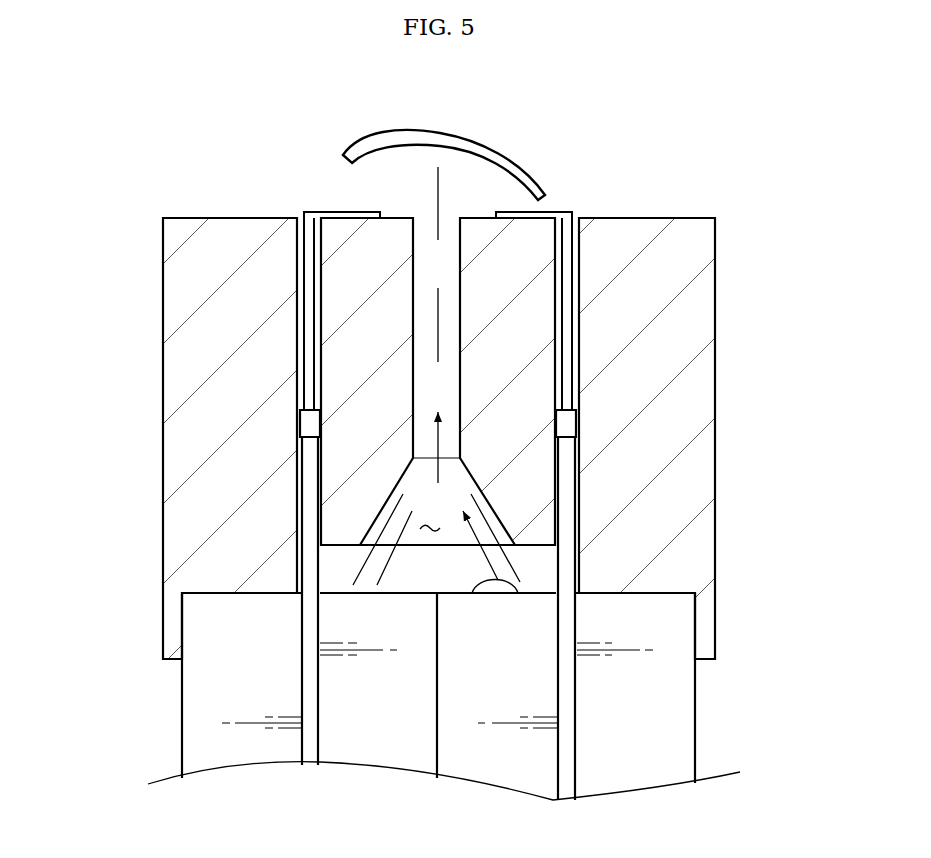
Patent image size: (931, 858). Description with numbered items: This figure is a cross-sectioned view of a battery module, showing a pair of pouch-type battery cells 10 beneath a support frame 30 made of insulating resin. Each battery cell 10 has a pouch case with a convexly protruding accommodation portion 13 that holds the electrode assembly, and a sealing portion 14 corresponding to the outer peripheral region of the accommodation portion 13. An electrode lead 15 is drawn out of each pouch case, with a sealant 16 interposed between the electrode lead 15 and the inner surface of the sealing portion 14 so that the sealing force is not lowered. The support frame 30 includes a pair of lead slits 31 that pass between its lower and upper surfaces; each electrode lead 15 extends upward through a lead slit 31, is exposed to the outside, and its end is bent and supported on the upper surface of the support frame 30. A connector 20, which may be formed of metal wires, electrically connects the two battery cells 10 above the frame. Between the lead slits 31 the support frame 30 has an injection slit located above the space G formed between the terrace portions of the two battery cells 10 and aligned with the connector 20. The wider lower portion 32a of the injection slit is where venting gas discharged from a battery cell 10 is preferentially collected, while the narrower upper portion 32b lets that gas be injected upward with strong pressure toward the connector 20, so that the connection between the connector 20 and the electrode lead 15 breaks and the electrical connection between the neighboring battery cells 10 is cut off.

The battery cell 10 is at (717, 714).
The accommodation portion 13 is at (472, 593).
The sealing portion 14 is at (557, 507).
The electrode lead 15 is at (317, 210).
The sealant 16 is at (308, 427).
The connector 20 is at (482, 140).
The support frame 30 is at (180, 200).
The lead slit 31 is at (297, 217).
The lower portion of the injection slit 32a is at (492, 513).
The upper portion of the injection slit 32b is at (462, 365).
The space G is at (430, 530).